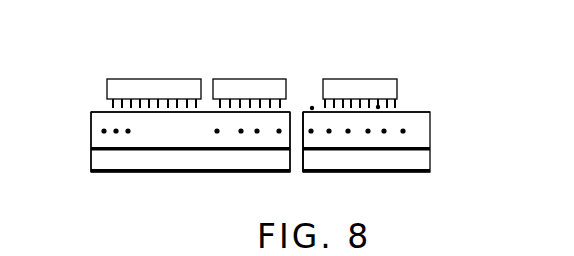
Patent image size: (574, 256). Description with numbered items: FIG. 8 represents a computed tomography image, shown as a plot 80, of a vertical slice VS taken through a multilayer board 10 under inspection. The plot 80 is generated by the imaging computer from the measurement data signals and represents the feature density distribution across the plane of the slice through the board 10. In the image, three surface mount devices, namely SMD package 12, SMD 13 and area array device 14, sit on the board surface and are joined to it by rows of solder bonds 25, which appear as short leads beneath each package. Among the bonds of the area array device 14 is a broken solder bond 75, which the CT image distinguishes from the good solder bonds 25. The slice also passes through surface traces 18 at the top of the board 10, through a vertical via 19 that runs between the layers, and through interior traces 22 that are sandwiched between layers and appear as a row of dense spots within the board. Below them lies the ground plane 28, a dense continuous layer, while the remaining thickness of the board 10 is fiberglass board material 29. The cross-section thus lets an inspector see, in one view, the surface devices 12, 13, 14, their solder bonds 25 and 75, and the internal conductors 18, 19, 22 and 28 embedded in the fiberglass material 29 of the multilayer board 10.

The multiple-layer board 10 is at (160, 181).
The SMD package 12 is at (185, 85).
The SMD 13 is at (236, 87).
The area array device 14 is at (343, 85).
The surface traces 18 is at (104, 112).
The vertical via 19 is at (296, 166).
The interior traces 22 is at (404, 129).
The solder bonds 25 is at (160, 100).
The ground plane 28 is at (430, 149).
The fiberglass board material 29 is at (416, 131).
The broken solder bond 75 is at (379, 104).
The plot 80 is at (123, 70).